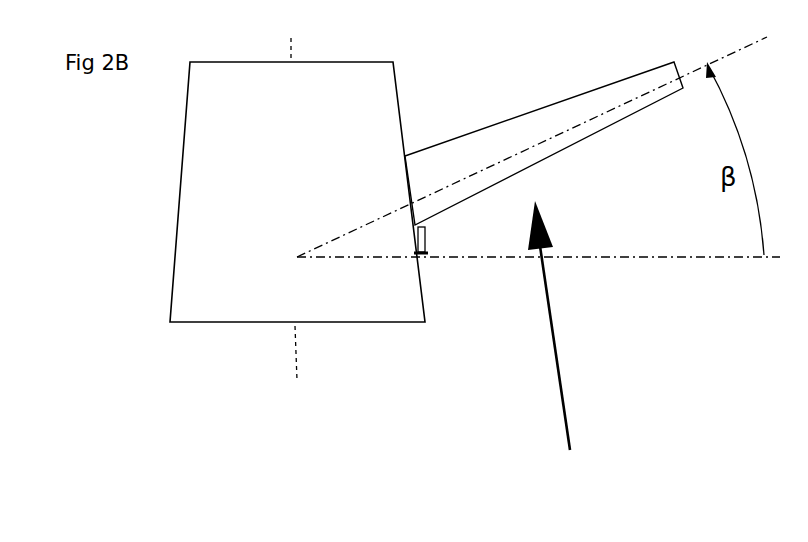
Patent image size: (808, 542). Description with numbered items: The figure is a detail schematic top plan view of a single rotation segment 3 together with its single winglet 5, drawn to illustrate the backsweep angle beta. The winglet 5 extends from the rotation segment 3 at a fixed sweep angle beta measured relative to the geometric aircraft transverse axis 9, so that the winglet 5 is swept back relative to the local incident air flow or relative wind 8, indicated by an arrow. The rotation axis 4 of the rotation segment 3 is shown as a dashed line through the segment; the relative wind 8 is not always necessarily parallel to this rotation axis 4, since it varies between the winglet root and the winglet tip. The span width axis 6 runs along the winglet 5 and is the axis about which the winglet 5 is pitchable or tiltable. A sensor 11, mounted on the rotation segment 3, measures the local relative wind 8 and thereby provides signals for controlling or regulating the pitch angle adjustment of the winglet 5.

The rotation segment 3 is at (204, 181).
The rotation axis 4 is at (294, 211).
The winglet 5 is at (501, 156).
The span width axis 6 is at (532, 146).
The relative wind 8 is at (558, 325).
The aircraft transverse axis 9 is at (545, 258).
The sensor 11 is at (425, 238).